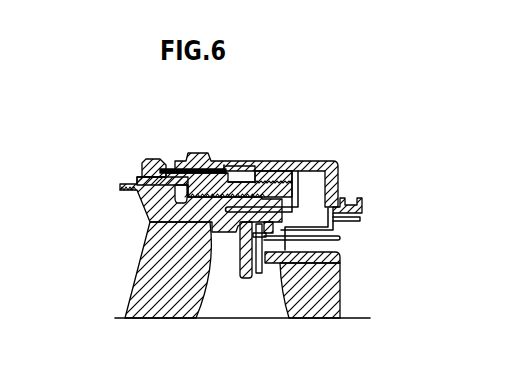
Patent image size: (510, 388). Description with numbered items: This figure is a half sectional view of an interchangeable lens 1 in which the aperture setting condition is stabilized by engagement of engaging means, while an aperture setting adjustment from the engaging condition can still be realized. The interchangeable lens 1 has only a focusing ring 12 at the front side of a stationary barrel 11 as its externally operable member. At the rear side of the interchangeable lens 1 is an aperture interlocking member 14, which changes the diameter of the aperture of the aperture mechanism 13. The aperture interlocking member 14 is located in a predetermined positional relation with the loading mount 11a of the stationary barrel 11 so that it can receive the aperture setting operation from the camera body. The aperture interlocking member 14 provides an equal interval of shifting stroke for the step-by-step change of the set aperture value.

The interchangeable lens 1 is at (332, 153).
The stationary barrel 11 is at (270, 165).
The loading mount 11a is at (362, 204).
The focusing ring 12 is at (153, 160).
The aperture mechanism 13 is at (265, 277).
The aperture interlocking member 14 is at (360, 222).